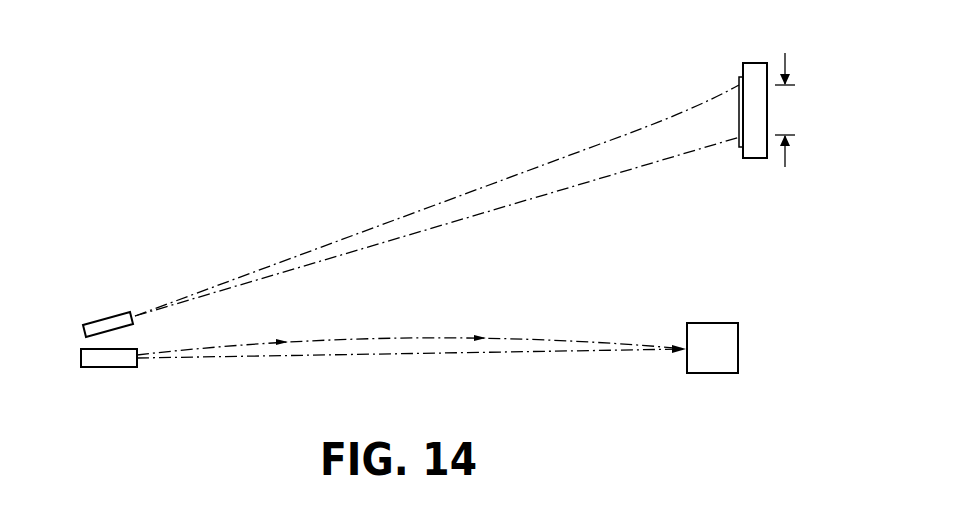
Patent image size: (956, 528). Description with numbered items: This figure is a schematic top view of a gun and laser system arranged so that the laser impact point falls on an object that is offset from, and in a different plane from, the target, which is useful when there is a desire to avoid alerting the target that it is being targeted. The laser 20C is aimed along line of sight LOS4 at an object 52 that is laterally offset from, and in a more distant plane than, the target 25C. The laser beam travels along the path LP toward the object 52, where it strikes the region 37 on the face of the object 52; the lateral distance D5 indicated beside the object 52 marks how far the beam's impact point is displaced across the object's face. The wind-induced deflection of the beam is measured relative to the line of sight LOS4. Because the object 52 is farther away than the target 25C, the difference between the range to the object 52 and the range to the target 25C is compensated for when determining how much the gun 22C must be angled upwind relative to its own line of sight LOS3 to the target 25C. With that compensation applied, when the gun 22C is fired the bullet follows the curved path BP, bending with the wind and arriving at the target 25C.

The laser 20C is at (103, 319).
The gun 22C is at (107, 368).
The target 25C is at (712, 374).
The object 52 is at (752, 62).
The target strip 37 is at (740, 83).
The laser path LP is at (583, 160).
The line of sight LOS4 is at (503, 208).
The line of sight LOS3 is at (303, 356).
The curved path BP is at (407, 337).
The distance D5 is at (788, 123).